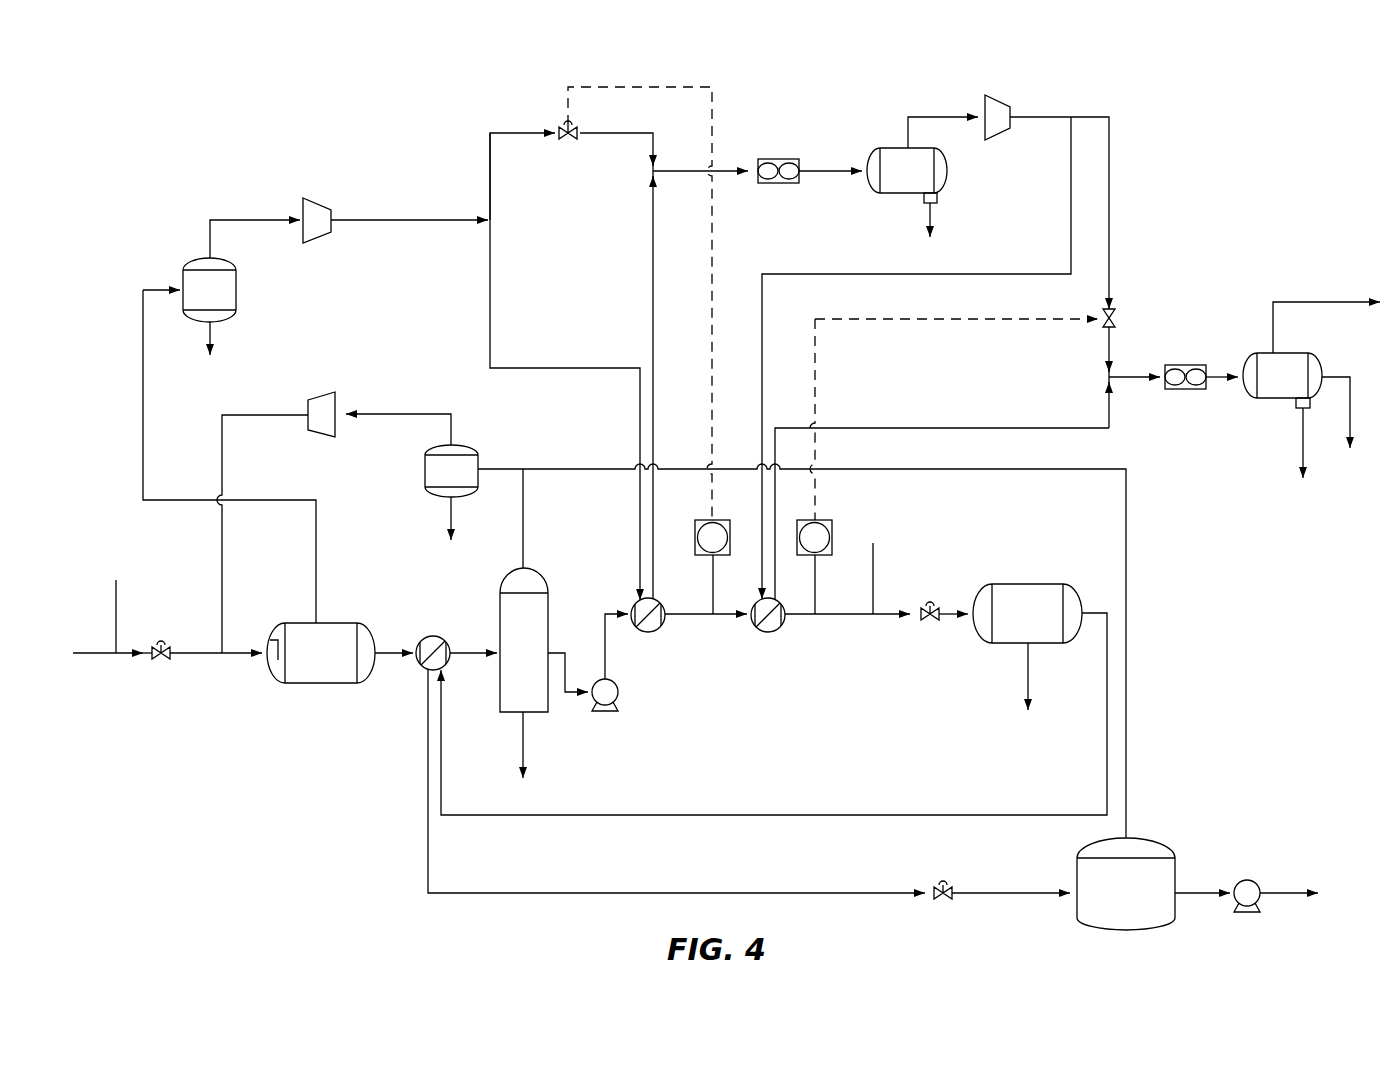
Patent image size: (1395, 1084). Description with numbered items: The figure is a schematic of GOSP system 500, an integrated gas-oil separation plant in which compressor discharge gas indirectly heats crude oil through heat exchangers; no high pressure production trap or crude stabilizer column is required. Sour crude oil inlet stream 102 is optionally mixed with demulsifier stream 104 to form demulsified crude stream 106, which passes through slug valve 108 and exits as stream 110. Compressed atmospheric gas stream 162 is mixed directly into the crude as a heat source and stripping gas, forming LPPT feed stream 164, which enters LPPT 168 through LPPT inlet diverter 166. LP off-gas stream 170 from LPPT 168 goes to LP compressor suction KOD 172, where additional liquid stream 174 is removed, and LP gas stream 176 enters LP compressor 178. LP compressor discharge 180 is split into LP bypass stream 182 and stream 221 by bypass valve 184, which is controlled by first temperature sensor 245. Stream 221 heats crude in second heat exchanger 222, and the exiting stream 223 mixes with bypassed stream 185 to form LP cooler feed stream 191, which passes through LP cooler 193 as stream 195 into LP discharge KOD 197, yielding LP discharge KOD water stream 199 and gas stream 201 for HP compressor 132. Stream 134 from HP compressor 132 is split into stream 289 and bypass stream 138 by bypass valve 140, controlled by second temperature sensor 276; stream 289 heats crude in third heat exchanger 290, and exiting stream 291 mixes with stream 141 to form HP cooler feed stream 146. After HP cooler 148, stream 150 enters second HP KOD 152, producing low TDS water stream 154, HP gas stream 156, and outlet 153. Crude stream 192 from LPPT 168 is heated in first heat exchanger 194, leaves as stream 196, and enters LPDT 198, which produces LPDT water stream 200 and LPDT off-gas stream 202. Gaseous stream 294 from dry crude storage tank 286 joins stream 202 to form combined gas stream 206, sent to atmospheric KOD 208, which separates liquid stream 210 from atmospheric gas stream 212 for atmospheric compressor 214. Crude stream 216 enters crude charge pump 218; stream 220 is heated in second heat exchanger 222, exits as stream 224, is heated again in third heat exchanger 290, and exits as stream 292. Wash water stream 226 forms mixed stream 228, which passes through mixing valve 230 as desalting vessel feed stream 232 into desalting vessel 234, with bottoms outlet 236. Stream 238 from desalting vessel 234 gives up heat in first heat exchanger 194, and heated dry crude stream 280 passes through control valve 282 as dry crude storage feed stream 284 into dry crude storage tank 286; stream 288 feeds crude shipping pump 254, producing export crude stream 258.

The GOSP system 500 is at (153, 82).
The sour crude oil inlet stream 102 is at (88, 655).
The demulsifier stream 104 is at (114, 612).
The demulsified crude stream 106 is at (130, 657).
The slug valve 108 is at (160, 640).
The stream 110 is at (182, 650).
The compressed atmospheric gas stream 162 is at (225, 565).
The LPPT feed stream 164 is at (240, 657).
The LPPT inlet diverter 166 is at (272, 645).
The LPPT 168 is at (321, 653).
The LP off-gas stream 170 is at (143, 395).
The LP compressor suction KOD 172 is at (209, 290).
The additional liquid stream 174 is at (215, 335).
The LP gas stream 176 is at (245, 220).
The LP compressor 178 is at (317, 198).
The LP compressor discharge 180 is at (378, 225).
The LP bypass stream 182 is at (512, 133).
The bypass valve 184 is at (568, 140).
The bypassed stream 185 is at (612, 133).
The LP cooler feed stream 191 is at (725, 175).
The LP cooler 193 is at (773, 159).
The stream 195 is at (832, 175).
The LP discharge KOD 197 is at (907, 170).
The LP discharge KOD water stream 199 is at (928, 218).
The stream 201 is at (950, 117).
The HP compressor 132 is at (1003, 95).
The stream 134 is at (1045, 125).
The bypass stream 138 is at (1088, 117).
The bypass valve 140 is at (1100, 318).
The stream 141 is at (1107, 343).
The HP cooler feed stream 146 is at (1138, 380).
The HP cooler 148 is at (1178, 365).
The stream 150 is at (1222, 376).
The second HP KOD 152 is at (1282, 375).
The drum outlet line 153 is at (1332, 372).
The low TDS water stream 154 is at (1300, 445).
The HP gas stream 156 is at (1325, 300).
The stream 192 is at (388, 648).
The first heat exchanger 194 is at (440, 634).
The stream 196 is at (462, 660).
The LPDT 198 is at (524, 640).
The LPDT water stream 200 is at (518, 735).
The LPDT off-gas stream 202 is at (525, 537).
The combined gas stream 206 is at (495, 467).
The atmospheric KOD 208 is at (451, 471).
The liquid stream 210 is at (447, 510).
The atmospheric gas stream 212 is at (368, 412).
The atmospheric compressor 214 is at (322, 395).
The stream 216 is at (577, 700).
The crude charge pump 218 is at (618, 683).
The stream 220 is at (605, 625).
The stream 221 is at (490, 315).
The second heat exchanger 222 is at (655, 629).
The stream 223 is at (653, 310).
The stream 224 is at (688, 612).
The wash water stream 226 is at (878, 548).
The mixed stream 228 is at (898, 618).
The mixing valve 230 is at (930, 600).
The desalting vessel feed stream 232 is at (935, 618).
The desalting vessel 234 is at (1027, 613).
The drum liquid outlet 236 is at (1025, 685).
The stream 238 is at (672, 814).
The first temperature sensor 245 is at (705, 520).
The crude shipping pump 254 is at (1248, 878).
The export crude stream 258 is at (1285, 892).
The second temperature sensor 276 is at (822, 520).
The heated dry crude stream 280 is at (580, 890).
The control valve 282 is at (945, 880).
The dry crude storage feed stream 284 is at (1028, 890).
The dry crude storage tank 286 is at (1126, 884).
The stream 288 is at (1195, 890).
The stream 289 is at (858, 275).
The third heat exchanger 290 is at (765, 632).
The stream 291 is at (940, 428).
The stream 292 is at (845, 618).
The gaseous stream 294 is at (1128, 600).